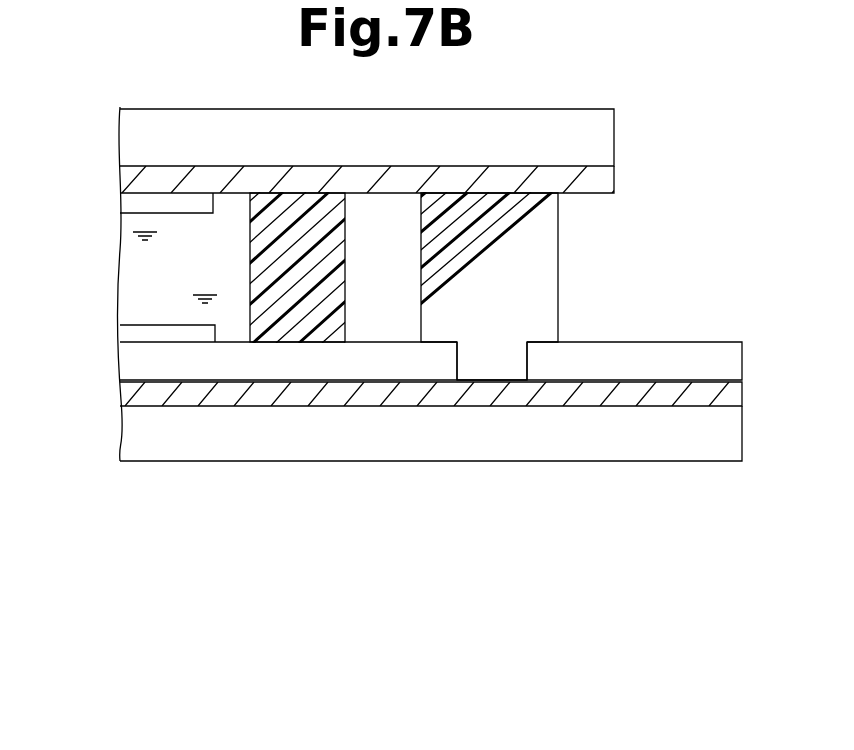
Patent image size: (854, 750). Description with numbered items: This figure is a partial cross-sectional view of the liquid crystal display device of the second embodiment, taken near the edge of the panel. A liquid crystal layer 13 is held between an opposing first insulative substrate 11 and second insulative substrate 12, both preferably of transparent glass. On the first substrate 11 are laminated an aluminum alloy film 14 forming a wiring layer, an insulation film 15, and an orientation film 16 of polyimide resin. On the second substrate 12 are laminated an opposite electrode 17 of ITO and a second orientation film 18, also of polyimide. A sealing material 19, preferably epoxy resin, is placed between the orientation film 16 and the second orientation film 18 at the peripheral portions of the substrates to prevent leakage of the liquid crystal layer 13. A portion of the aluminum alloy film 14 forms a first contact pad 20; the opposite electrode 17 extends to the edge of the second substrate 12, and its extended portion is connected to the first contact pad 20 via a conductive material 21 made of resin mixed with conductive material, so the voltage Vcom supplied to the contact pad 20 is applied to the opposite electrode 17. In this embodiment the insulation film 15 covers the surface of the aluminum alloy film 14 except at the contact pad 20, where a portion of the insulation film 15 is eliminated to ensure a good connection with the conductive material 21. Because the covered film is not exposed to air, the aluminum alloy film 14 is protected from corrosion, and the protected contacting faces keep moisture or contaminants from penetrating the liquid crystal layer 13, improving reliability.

The first insulative substrate 11 is at (558, 451).
The second insulative substrate 12 is at (614, 133).
The liquid crystal layer 13 is at (128, 265).
The aluminum alloy film 14 is at (399, 403).
The insulation film 15 is at (127, 370).
The orientation film 16 is at (125, 333).
The opposite electrode 17 is at (121, 180).
The second orientation film 18 is at (119, 205).
The sealing material 19 is at (250, 265).
The first contact pad 20 is at (507, 378).
The conductive material 21 is at (558, 230).